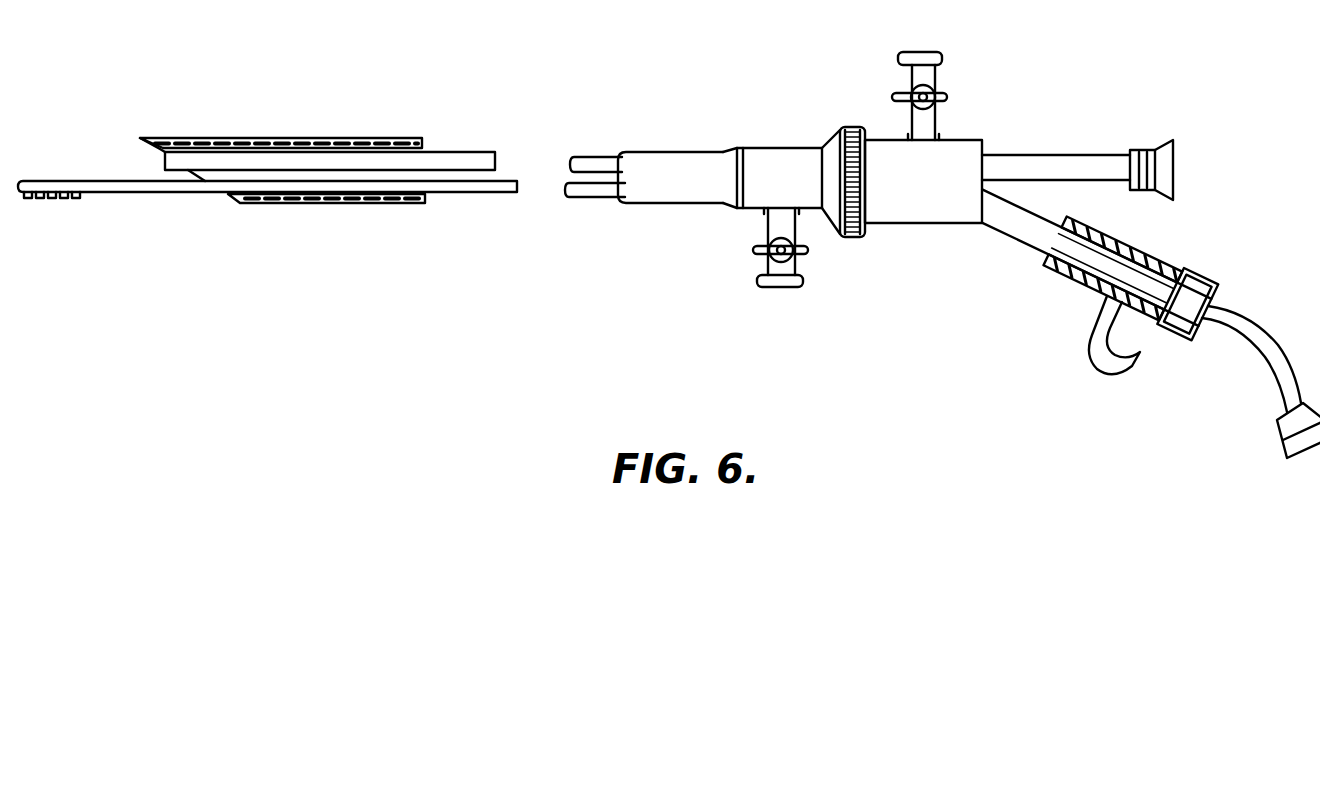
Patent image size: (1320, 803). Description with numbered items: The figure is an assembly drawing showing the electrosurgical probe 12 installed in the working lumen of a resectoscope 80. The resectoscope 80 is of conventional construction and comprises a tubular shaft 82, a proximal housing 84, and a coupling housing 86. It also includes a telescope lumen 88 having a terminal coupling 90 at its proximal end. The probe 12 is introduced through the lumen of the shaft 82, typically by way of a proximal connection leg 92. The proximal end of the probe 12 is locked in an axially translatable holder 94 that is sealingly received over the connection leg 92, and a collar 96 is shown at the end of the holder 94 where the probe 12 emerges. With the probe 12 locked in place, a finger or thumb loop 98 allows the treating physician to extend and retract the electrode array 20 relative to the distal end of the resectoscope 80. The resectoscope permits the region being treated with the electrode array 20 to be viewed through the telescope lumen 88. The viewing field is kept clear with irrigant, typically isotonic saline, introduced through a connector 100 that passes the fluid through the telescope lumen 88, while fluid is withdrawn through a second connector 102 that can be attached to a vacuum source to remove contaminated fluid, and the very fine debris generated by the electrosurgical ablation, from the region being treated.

The probe 12 is at (145, 187).
The electrode array 20 is at (60, 212).
The resectoscope 80 is at (311, 86).
The tubular shaft 82 is at (333, 197).
The proximal housing 84 is at (778, 150).
The coupling housing 86 is at (915, 210).
The telescope lumen 88 is at (372, 153).
The terminal coupling 90 is at (1148, 162).
The proximal connection leg 92 is at (1025, 232).
The axially translatable holder 94 is at (1133, 252).
The collar 96 is at (1217, 281).
The finger or thumb loop 98 is at (1117, 375).
The connector 100 is at (925, 72).
The second connector 102 is at (777, 220).